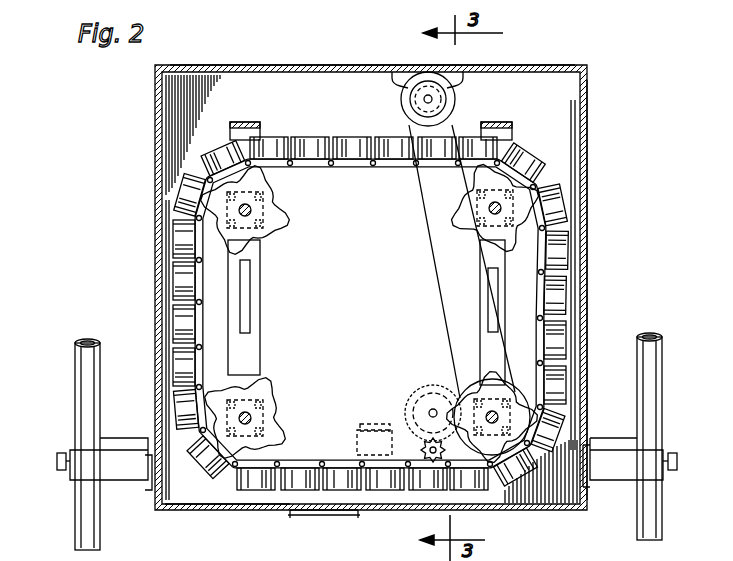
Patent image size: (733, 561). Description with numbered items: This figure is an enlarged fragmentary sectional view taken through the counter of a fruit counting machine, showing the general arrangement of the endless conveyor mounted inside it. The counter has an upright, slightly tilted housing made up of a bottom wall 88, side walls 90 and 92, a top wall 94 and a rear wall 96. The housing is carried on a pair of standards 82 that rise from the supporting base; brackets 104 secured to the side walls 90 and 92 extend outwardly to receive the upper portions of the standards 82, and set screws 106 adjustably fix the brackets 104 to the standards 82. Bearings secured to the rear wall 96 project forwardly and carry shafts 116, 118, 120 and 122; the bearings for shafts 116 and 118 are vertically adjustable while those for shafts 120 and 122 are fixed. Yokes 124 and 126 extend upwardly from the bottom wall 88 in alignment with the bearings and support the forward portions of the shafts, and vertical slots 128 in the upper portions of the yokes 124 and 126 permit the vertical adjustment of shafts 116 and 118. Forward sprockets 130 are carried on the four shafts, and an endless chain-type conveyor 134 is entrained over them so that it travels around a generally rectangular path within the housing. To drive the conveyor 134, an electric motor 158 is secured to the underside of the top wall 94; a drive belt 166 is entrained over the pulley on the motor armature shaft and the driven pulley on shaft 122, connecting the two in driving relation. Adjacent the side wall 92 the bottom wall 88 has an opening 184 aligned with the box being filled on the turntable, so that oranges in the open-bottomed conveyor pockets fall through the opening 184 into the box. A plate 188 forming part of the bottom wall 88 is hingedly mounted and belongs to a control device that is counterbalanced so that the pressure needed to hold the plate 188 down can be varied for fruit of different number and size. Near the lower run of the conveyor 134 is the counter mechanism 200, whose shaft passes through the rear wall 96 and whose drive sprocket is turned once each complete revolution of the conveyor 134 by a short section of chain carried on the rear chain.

The standards 82 is at (82, 500).
The bottom wall 88 is at (540, 507).
The side wall 90 is at (582, 298).
The side wall 92 is at (155, 278).
The top wall 94 is at (261, 65).
The rear wall 96 is at (185, 128).
The brackets 104 is at (132, 482).
The set screws 106 is at (58, 458).
The shaft 116 is at (252, 212).
The shaft 118 is at (493, 210).
The shaft 120 is at (252, 418).
The shaft 122 is at (496, 421).
The yoke 124 is at (252, 362).
The yoke 126 is at (484, 345).
The vertical slots 128 is at (252, 314).
The forward sprockets 130 is at (290, 232).
The endless conveyor 134 is at (380, 167).
The electric motor 158 is at (456, 105).
The drive belt 166 is at (441, 312).
The opening 184 is at (195, 507).
The plate 188 is at (330, 513).
The counter mechanism 200 is at (396, 428).